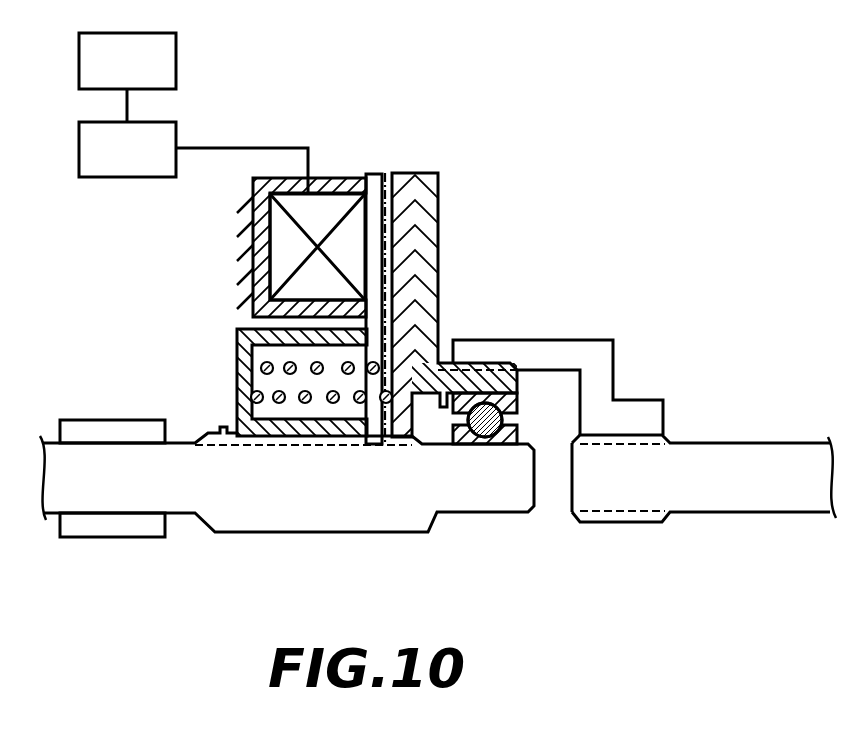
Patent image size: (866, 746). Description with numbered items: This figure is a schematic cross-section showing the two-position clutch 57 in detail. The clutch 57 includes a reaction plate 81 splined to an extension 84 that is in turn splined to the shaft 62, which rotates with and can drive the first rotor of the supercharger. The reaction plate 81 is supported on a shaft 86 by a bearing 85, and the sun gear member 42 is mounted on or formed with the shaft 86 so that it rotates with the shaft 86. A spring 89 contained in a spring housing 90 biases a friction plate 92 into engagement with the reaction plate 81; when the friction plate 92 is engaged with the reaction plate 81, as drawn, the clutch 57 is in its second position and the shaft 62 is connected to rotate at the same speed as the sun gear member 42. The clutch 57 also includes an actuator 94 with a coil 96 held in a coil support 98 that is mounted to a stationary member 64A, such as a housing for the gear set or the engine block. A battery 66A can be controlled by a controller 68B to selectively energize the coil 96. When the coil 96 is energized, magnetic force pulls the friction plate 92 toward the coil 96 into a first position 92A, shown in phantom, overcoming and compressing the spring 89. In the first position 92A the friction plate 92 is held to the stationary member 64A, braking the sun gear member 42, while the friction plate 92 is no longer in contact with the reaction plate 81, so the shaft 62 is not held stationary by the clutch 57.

The sun gear member 42 is at (112, 420).
The two-position clutch 57 is at (624, 257).
The shaft 62 is at (752, 513).
The stationary member 64A is at (240, 245).
The battery 66A is at (104, 158).
The electronic controller 68B is at (104, 75).
The reaction plate 81 is at (438, 215).
The extension 84 is at (600, 340).
The bearing 85 is at (527, 419).
The shaft 86 is at (264, 534).
The spring 89 is at (306, 402).
The spring housing 90 is at (237, 363).
The friction plate 92 is at (402, 173).
The first position 92A is at (376, 174).
The actuator 94 is at (326, 150).
The coil 96 is at (283, 273).
The coil support 98 is at (348, 176).